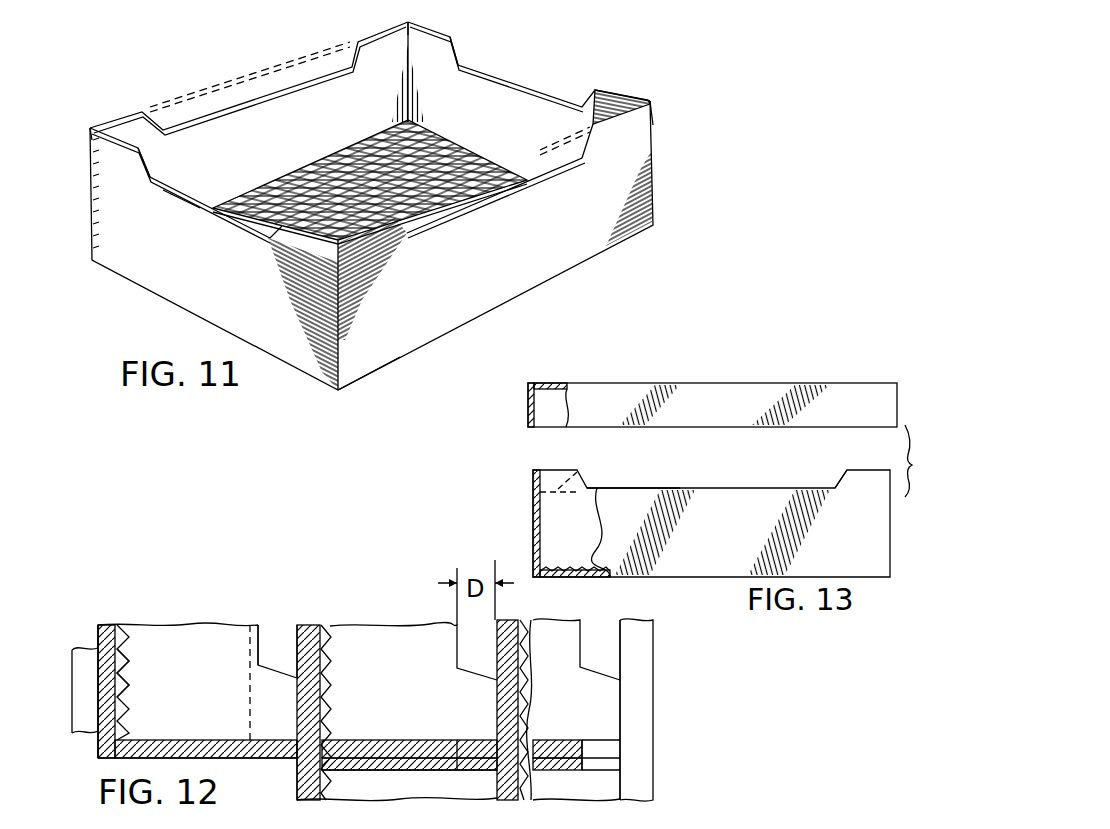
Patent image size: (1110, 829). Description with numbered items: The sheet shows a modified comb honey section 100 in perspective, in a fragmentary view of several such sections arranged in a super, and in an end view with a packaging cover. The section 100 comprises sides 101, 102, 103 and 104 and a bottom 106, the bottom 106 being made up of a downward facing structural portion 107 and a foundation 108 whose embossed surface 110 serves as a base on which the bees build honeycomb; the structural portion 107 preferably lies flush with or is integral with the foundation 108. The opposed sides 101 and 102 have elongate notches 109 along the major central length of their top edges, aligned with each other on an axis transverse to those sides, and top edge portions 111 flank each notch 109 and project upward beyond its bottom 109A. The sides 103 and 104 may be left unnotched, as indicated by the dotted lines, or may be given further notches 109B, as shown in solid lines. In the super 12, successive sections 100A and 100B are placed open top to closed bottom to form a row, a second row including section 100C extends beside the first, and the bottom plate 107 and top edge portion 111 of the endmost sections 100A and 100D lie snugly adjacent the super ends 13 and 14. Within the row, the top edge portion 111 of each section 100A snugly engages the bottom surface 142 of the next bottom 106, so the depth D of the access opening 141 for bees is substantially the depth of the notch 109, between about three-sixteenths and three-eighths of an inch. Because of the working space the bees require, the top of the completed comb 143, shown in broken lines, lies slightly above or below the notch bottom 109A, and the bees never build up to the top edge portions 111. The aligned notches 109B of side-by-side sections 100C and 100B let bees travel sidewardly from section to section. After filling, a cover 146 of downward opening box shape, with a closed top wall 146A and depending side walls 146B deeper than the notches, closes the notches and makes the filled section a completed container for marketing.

In FIG. 11, the comb honey section 100 is at (630, 62).
In FIG. 11, the side 101 is at (529, 88).
In FIG. 12, the side 101 is at (197, 705).
In FIG. 11, the side 102 is at (214, 259).
In FIG. 13, the side 102 is at (532, 517).
In FIG. 11, the side 103 is at (249, 82).
In FIG. 12, the side 103 is at (357, 765).
In FIG. 11, the side 104 is at (465, 232).
In FIG. 13, the side 104 is at (711, 523).
In FIG. 12, the side 104 is at (118, 750).
In FIG. 11, the bottom 106 is at (408, 358).
In FIG. 13, the bottom 106 is at (679, 582).
In FIG. 12, the bottom 106 is at (94, 624).
In FIG. 12, the structural portion 107 is at (105, 626).
In FIG. 12, the foundation 108 is at (122, 627).
In FIG. 11, the notch 109 is at (150, 172).
In FIG. 13, the notch 109 is at (835, 487).
In FIG. 12, the notch 109 is at (282, 675).
In FIG. 11, the bottom of notch 109A is at (178, 198).
In FIG. 13, the bottom of notch 109A is at (640, 488).
In FIG. 12, the bottom of notch 109A is at (262, 627).
In FIG. 11, the further notch 109B is at (342, 55).
In FIG. 12, the further notch 109B is at (478, 742).
In FIG. 12, the embossed surface 110 is at (128, 690).
In FIG. 11, the top edge portion 111 is at (108, 150).
In FIG. 12, the top edge portion 111 is at (280, 718).
In FIG. 12, the super 12 is at (62, 712).
In FIG. 12, the super end 13 is at (72, 658).
In FIG. 12, the super end 14 is at (640, 710).
In FIG. 12, the section 100A is at (177, 616).
In FIG. 12, the section 100B is at (393, 614).
In FIG. 12, the section 100C is at (421, 812).
In FIG. 12, the section 100D is at (569, 613).
In FIG. 12, the access opening 141 is at (263, 603).
In FIG. 12, the bottom surface 142 is at (293, 622).
In FIG. 13, the top of completed comb 143 is at (583, 475).
In FIG. 13, the cover 146 is at (673, 387).
In FIG. 13, the top wall 146A is at (668, 383).
In FIG. 13, the side walls 146B is at (528, 412).